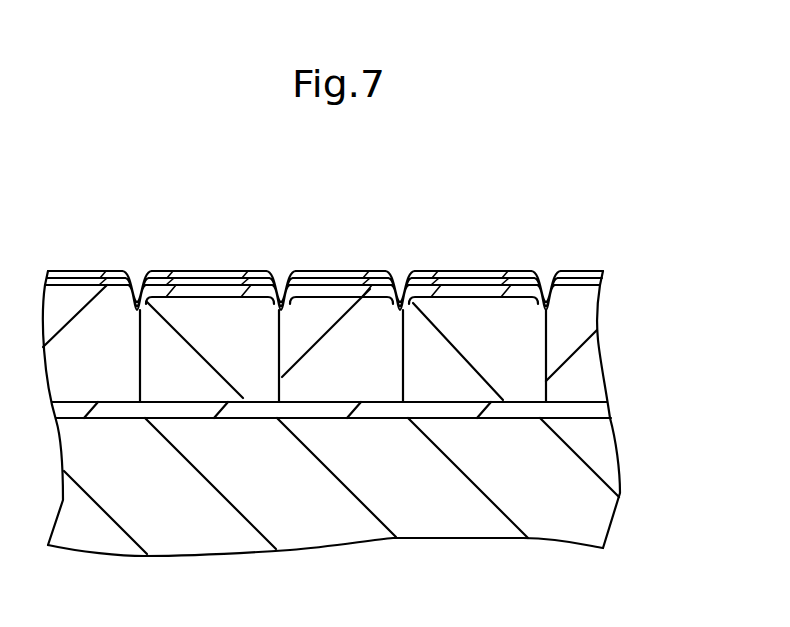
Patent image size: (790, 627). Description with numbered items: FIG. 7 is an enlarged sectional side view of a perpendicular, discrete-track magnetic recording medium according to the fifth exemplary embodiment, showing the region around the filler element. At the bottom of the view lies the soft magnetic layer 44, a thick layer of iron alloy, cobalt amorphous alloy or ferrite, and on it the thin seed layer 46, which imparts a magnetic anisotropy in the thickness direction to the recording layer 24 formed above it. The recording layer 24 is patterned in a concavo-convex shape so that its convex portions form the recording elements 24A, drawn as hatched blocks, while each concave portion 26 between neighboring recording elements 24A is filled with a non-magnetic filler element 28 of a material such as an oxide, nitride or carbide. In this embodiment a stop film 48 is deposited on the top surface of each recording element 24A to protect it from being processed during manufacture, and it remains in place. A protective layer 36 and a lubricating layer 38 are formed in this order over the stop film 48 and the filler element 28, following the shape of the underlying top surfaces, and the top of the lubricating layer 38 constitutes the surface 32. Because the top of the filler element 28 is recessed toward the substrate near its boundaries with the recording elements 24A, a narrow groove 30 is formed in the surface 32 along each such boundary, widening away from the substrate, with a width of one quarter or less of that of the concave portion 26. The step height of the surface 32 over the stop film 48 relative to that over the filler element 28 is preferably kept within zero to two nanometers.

The recording layer 24 is at (608, 343).
The recording element 24A is at (466, 307).
The concave portion 26 is at (324, 298).
The filler element 28 is at (350, 293).
The groove 30 is at (282, 264).
The surface 32 is at (88, 270).
The protective layer 36 is at (600, 284).
The lubricating layer 38 is at (603, 278).
The soft magnetic layer 44 is at (622, 492).
The seed layer 46 is at (613, 412).
The stop film 48 is at (193, 290).